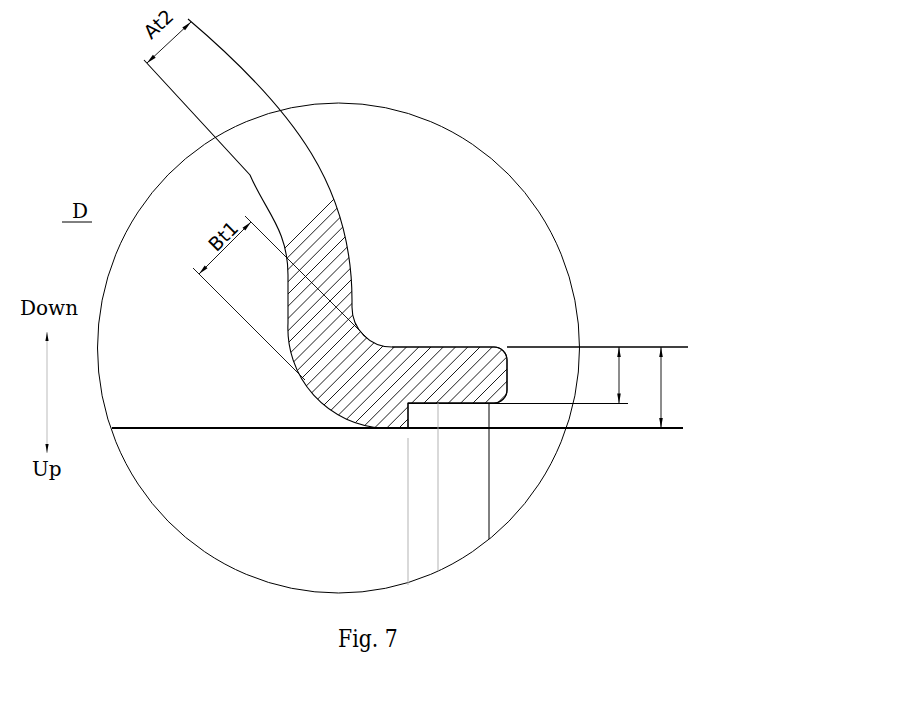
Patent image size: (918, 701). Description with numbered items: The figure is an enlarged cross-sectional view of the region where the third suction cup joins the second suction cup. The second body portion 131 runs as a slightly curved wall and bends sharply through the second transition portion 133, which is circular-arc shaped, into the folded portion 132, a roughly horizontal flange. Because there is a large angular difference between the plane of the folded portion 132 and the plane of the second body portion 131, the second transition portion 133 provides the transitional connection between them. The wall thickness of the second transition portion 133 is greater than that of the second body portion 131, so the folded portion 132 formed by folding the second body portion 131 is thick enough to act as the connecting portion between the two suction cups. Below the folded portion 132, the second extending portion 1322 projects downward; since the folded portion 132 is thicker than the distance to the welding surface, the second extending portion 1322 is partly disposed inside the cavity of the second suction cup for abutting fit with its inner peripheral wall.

The second body portion 131 is at (287, 168).
The folded portion 132 is at (437, 368).
The second transition portion 133 is at (354, 368).
The second extending portion 1322 is at (400, 423).